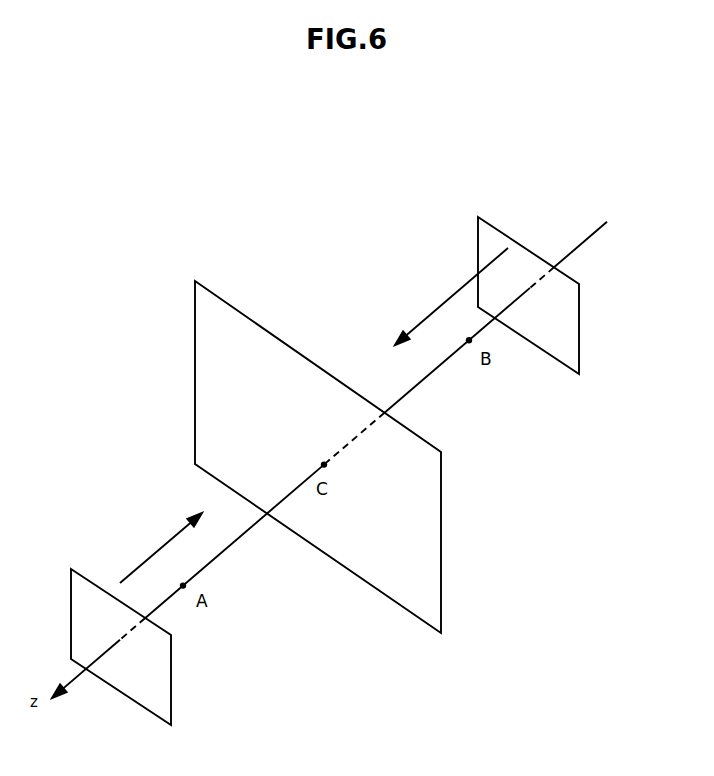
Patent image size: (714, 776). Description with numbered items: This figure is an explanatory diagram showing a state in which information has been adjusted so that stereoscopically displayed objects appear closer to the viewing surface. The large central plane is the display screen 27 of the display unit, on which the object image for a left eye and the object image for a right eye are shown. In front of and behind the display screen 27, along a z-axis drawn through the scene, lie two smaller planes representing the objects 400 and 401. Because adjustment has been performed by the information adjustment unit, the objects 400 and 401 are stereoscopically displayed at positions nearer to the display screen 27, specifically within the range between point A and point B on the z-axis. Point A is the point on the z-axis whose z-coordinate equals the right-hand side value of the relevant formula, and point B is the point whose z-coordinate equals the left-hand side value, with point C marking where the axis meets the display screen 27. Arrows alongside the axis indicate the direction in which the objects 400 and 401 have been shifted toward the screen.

The display screen 27 is at (441, 543).
The object 400 is at (171, 680).
The object 401 is at (579, 330).